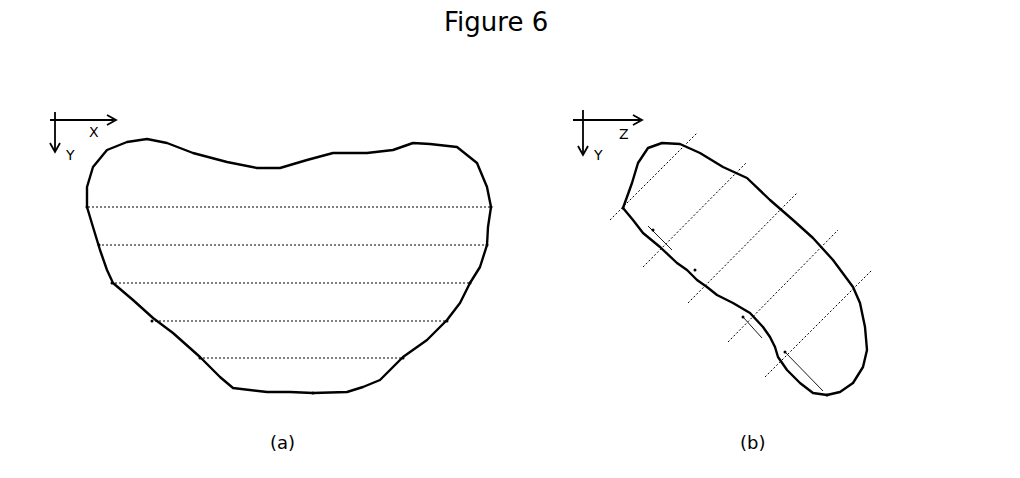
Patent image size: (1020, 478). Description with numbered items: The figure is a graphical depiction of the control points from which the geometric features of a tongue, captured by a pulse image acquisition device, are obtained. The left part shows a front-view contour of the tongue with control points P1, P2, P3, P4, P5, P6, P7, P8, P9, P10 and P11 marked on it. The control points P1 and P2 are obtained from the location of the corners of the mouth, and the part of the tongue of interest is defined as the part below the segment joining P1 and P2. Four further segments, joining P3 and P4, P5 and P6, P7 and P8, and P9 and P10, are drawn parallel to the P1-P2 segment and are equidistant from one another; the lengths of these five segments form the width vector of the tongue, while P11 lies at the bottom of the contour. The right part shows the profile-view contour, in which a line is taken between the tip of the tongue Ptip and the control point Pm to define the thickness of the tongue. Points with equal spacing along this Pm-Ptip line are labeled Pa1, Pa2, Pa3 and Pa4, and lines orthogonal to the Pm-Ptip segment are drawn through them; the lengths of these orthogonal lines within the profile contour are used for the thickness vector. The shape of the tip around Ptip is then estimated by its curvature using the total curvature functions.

The control point P1 is at (73, 199).
The control point P2 is at (504, 199).
The control point P3 is at (82, 247).
The control point P4 is at (503, 247).
The control point P5 is at (100, 285).
The control point P6 is at (486, 283).
The control point P7 is at (135, 326).
The control point P8 is at (460, 325).
The control point P9 is at (184, 360).
The control point P10 is at (422, 360).
The control point P11 is at (324, 407).
The control point Pm is at (607, 199).
The axis point Pa1 is at (666, 222).
The axis point Pa2 is at (709, 262).
The axis point Pa3 is at (767, 321).
The axis point Pa4 is at (804, 356).
The tip of the tongue Ptip is at (824, 408).